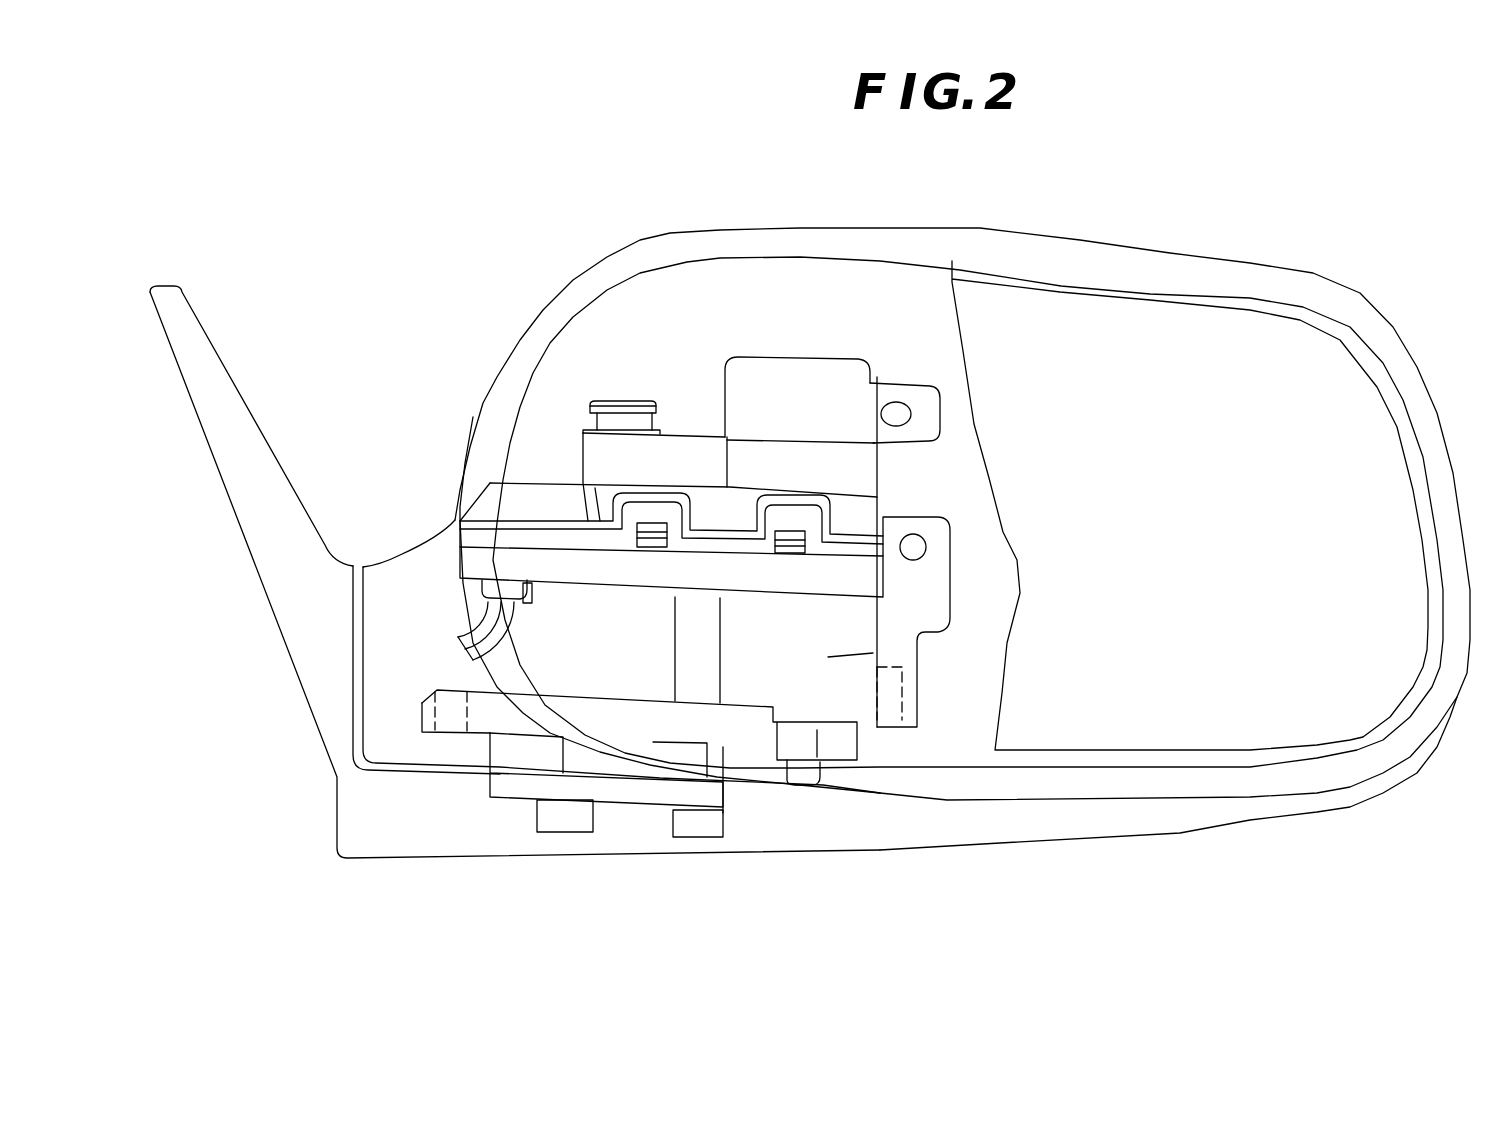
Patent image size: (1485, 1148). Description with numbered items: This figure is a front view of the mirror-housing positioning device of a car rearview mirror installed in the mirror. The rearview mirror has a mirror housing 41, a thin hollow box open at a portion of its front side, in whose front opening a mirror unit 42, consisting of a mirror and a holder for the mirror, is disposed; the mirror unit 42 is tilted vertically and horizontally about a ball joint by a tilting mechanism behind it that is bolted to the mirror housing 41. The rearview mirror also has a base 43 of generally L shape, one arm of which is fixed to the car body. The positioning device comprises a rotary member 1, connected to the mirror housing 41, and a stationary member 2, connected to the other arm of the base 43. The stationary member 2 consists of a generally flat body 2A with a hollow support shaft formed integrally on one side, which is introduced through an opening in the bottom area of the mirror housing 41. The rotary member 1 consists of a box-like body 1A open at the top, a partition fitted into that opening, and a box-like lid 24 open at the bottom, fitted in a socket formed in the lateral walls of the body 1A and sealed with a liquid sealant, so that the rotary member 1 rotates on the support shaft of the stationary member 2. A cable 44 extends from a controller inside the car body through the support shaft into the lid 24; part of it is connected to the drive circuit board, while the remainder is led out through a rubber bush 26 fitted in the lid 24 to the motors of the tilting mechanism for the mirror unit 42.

The rotary member 1 is at (880, 497).
The box-like body 1A is at (850, 628).
The stationary member 2 is at (707, 812).
The generally flat body 2A is at (633, 793).
The box-like lid 24 is at (740, 386).
The rubber bush 26 is at (482, 594).
The mirror housing 41 is at (1068, 239).
The mirror unit 42 is at (1253, 337).
The base 43 is at (226, 402).
The cable 44 is at (453, 647).